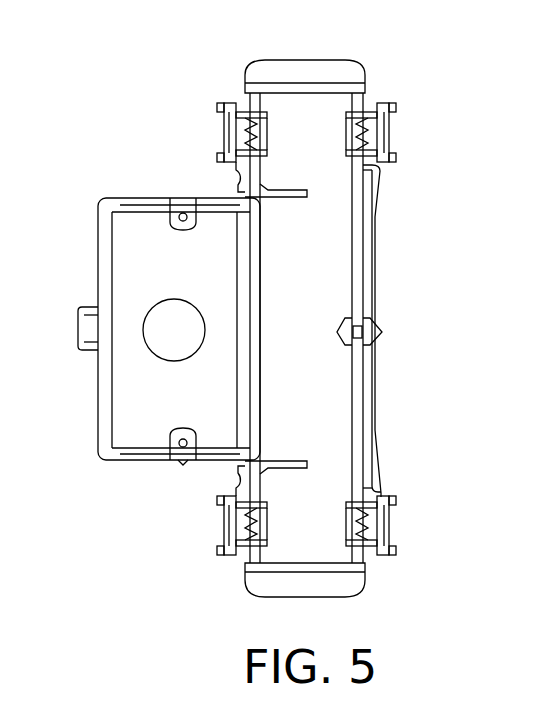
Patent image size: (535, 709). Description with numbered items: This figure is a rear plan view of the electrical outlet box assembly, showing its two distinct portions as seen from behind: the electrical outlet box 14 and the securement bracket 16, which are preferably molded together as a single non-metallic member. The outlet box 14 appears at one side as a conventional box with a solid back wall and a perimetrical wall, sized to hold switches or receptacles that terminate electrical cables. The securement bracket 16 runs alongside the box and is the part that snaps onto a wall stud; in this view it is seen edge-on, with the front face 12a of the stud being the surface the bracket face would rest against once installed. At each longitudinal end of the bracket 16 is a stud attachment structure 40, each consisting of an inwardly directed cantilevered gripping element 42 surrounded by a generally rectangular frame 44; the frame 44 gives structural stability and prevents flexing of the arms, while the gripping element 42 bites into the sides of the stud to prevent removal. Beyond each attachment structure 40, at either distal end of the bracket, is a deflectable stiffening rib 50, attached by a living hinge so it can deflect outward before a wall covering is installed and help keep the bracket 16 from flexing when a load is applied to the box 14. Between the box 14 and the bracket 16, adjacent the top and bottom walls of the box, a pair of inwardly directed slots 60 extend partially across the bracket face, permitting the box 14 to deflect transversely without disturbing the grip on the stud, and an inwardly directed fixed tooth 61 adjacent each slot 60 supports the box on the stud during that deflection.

The front face 12a is at (358, 522).
The electrical outlet box 14 is at (127, 400).
The securement bracket 16 is at (327, 282).
The stud attachment structure 40 is at (365, 138).
The cantilevered gripping element 42 is at (250, 136).
The rectangular frame 44 is at (365, 520).
The deflectable stiffening rib 50 is at (347, 68).
The slot 60 is at (308, 193).
The fixed tooth 61 is at (242, 478).